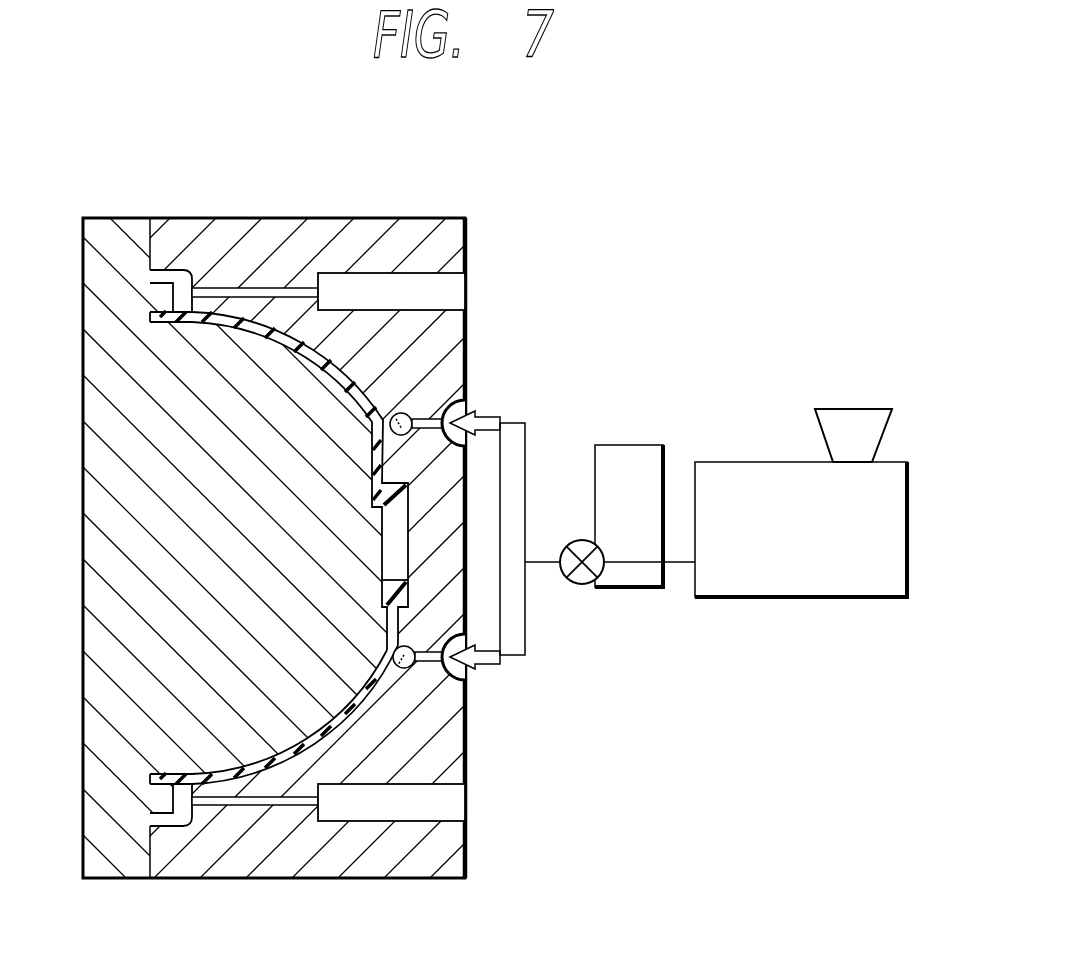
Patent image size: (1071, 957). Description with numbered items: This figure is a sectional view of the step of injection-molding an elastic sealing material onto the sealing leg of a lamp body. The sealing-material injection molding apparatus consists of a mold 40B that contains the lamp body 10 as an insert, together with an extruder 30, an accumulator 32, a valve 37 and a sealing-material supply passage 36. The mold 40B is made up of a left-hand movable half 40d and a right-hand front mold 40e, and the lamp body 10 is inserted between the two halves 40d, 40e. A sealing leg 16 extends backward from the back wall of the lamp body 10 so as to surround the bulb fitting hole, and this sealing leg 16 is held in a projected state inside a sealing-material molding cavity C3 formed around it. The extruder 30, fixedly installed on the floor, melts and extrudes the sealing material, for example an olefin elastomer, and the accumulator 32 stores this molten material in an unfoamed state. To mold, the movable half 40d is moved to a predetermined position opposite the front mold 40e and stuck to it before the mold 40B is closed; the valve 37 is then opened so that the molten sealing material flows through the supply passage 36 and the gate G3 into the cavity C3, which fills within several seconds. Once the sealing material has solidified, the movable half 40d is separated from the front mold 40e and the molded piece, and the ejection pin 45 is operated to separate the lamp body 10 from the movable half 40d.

The mold 40B is at (288, 143).
The left-hand movable half 40d is at (125, 218).
The right-hand front mold 40e is at (248, 218).
The ejection pin 45 is at (278, 288).
The lamp body 10 is at (337, 347).
The cavity C3 is at (394, 393).
The sealing leg 16 is at (415, 418).
The gate G3 is at (458, 402).
The sealing-material supply passage 36 is at (525, 633).
The accumulator 32 is at (645, 445).
The valve 37 is at (583, 582).
The extruder 30 is at (862, 598).